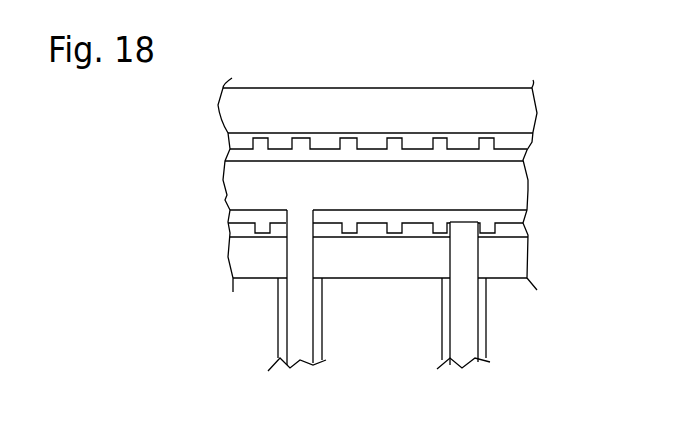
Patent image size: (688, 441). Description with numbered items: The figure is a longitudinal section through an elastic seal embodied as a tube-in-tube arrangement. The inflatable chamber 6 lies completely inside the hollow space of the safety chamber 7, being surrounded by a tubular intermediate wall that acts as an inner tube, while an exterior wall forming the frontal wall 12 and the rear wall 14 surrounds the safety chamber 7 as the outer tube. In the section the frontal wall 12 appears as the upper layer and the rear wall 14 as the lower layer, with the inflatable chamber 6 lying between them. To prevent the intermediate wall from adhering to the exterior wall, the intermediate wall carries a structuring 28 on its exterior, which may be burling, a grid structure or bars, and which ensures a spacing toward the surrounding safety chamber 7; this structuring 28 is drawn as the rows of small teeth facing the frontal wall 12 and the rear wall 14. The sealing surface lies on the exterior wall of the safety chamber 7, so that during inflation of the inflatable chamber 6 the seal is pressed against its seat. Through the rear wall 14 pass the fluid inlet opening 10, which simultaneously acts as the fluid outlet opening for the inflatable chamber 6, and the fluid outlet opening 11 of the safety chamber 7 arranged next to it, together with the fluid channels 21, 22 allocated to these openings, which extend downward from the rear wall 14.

The inflatable chamber 6 is at (328, 178).
The safety chamber 7 is at (373, 142).
The fluid inlet opening 10 is at (298, 212).
The fluid outlet opening 11 is at (462, 238).
The frontal wall 12 is at (407, 108).
The rear wall 14 is at (267, 262).
The fluid channel 21 is at (300, 302).
The fluid channel 22 is at (458, 303).
The structuring 28 is at (403, 138).